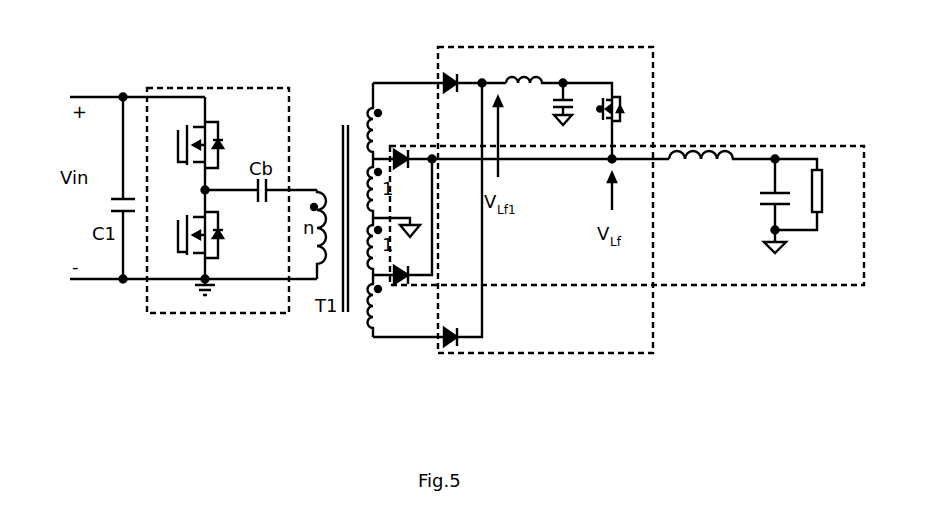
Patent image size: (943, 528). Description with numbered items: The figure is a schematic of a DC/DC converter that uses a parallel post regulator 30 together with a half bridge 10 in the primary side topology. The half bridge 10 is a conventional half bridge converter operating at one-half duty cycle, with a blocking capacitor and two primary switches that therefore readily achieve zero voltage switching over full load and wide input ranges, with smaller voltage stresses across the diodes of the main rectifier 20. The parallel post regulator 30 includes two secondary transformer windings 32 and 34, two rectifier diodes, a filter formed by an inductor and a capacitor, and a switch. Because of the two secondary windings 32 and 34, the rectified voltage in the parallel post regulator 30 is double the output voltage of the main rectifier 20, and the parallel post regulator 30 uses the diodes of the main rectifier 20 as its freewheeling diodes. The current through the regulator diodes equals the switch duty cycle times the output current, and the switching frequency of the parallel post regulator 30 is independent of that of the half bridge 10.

The half bridge 10 is at (246, 84).
The main rectifier 20 is at (778, 289).
The parallel post regulator 30 is at (527, 350).
The secondary transformer winding 32 is at (363, 104).
The secondary transformer winding 34 is at (363, 336).